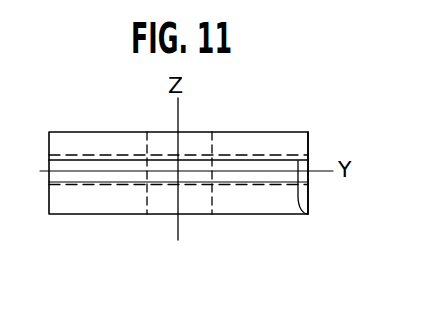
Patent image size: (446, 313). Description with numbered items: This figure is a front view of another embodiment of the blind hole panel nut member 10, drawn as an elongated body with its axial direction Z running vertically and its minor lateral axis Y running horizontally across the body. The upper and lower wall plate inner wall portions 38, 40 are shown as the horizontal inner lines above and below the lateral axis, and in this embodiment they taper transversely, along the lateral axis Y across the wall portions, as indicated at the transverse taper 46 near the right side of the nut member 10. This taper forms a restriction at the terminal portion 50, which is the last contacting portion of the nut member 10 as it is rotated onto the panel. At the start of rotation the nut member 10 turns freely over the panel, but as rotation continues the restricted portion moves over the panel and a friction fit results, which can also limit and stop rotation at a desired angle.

The nut member 10 is at (218, 121).
The upper wall plate inner wall portion 38 is at (94, 158).
The lower wall plate inner wall portion 40 is at (130, 180).
The transverse taper 46 is at (309, 164).
The terminal portion 50 is at (308, 214).